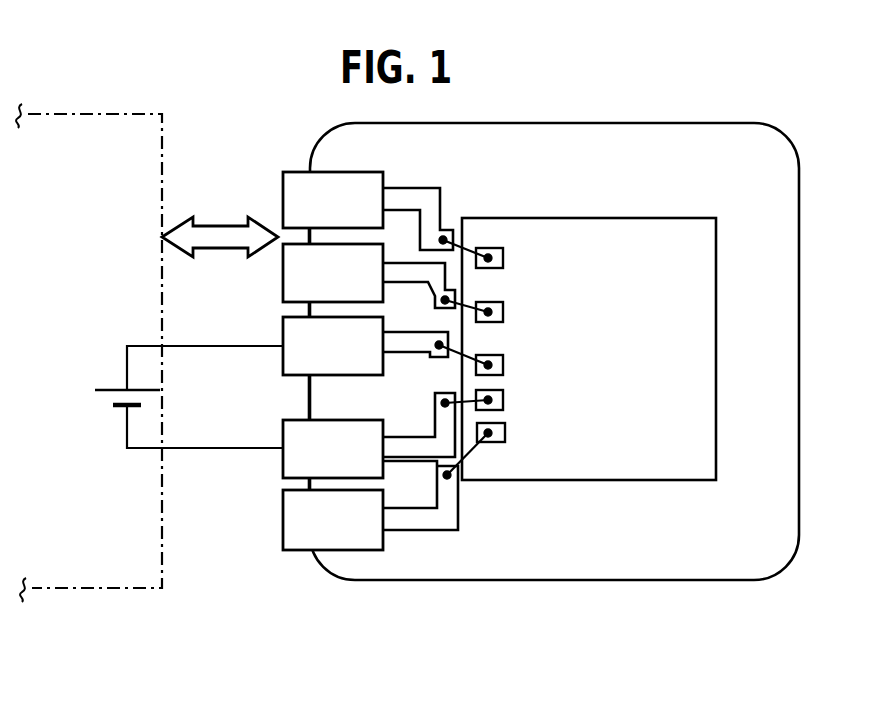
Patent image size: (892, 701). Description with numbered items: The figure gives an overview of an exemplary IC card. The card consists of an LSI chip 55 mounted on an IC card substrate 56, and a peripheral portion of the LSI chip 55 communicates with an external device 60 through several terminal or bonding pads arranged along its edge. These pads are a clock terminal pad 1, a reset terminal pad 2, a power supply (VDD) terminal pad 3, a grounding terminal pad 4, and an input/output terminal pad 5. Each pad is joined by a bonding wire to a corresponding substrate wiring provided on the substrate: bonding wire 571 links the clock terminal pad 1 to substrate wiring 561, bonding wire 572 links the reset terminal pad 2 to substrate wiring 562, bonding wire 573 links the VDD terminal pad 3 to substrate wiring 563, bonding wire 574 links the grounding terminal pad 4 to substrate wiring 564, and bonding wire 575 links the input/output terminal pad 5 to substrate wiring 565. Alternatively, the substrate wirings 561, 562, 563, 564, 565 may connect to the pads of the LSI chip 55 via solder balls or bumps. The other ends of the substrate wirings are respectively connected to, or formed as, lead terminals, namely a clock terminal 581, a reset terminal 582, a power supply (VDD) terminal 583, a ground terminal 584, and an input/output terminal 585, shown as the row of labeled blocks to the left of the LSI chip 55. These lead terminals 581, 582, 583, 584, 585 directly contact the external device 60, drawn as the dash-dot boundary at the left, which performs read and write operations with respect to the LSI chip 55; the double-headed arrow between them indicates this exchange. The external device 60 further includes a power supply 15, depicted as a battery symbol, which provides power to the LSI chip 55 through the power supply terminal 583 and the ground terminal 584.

The clock terminal pad 1 is at (503, 258).
The reset terminal pad 2 is at (503, 312).
The power supply (VDD) terminal pad 3 is at (503, 365).
The grounding terminal pad 4 is at (503, 400).
The input/output terminal pad 5 is at (505, 433).
The power supply 15 is at (111, 402).
The LSI chip 55 is at (648, 217).
The IC card substrate 56 is at (625, 122).
The external device 60 is at (93, 112).
The substrate wiring 561 is at (435, 188).
The substrate wiring 562 is at (396, 258).
The substrate wiring 563 is at (433, 333).
The substrate wiring 564 is at (434, 436).
The substrate wiring 565 is at (437, 507).
The bonding wire 571 is at (467, 248).
The bonding wire 572 is at (472, 305).
The bonding wire 573 is at (470, 357).
The bonding wire 574 is at (470, 393).
The bonding wire 575 is at (472, 444).
The clock terminal 581 is at (330, 172).
The reset terminal 582 is at (283, 279).
The power supply (VDD) terminal 583 is at (283, 363).
The ground terminal 584 is at (283, 429).
The input/output terminal 585 is at (283, 512).